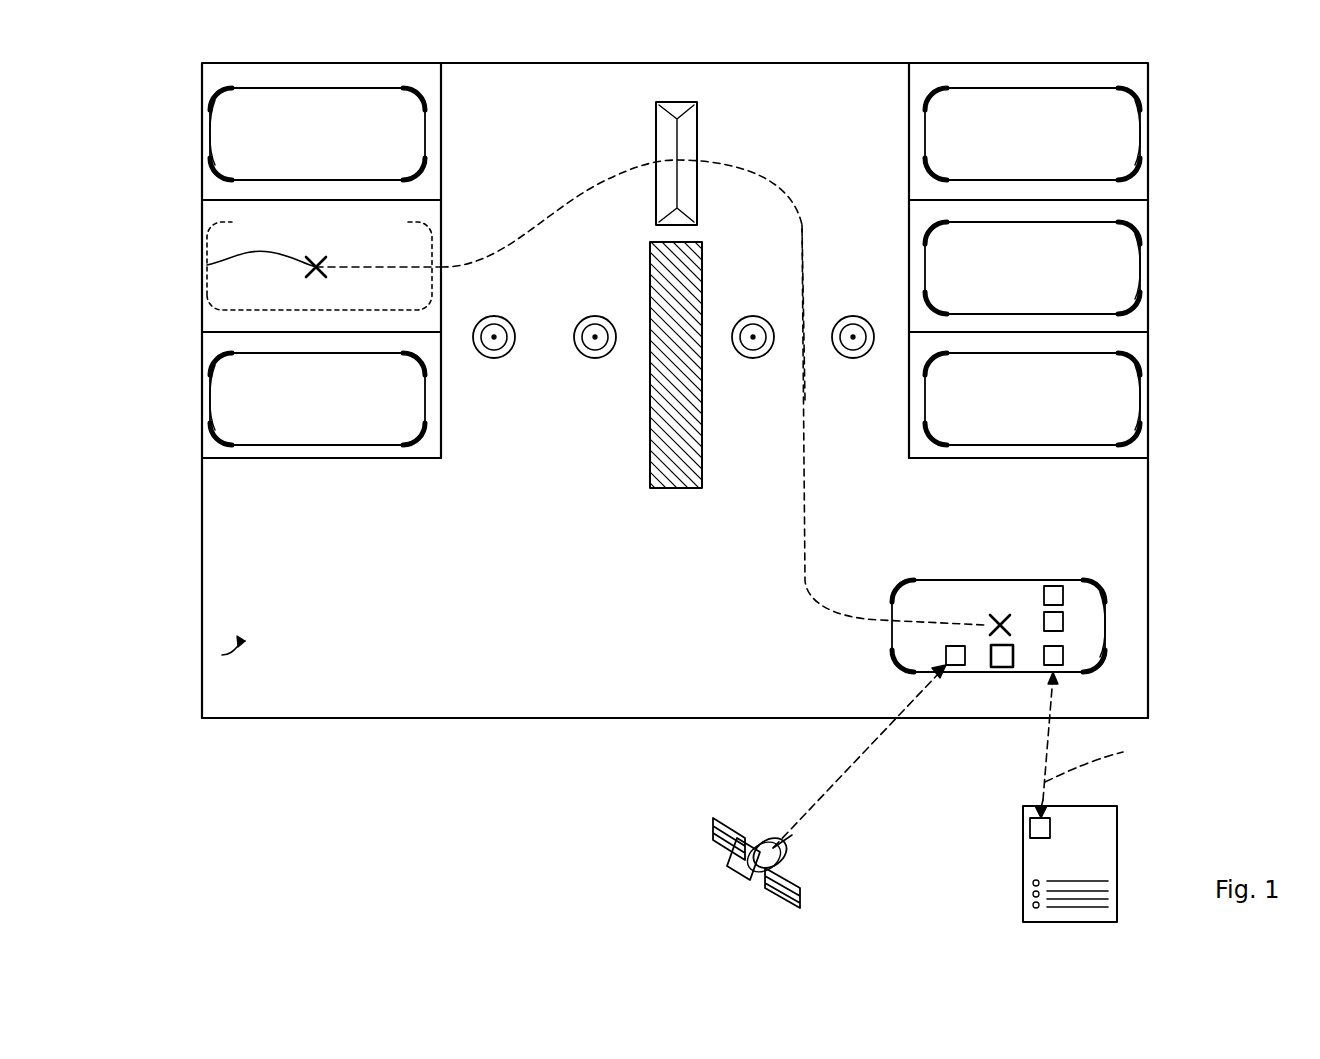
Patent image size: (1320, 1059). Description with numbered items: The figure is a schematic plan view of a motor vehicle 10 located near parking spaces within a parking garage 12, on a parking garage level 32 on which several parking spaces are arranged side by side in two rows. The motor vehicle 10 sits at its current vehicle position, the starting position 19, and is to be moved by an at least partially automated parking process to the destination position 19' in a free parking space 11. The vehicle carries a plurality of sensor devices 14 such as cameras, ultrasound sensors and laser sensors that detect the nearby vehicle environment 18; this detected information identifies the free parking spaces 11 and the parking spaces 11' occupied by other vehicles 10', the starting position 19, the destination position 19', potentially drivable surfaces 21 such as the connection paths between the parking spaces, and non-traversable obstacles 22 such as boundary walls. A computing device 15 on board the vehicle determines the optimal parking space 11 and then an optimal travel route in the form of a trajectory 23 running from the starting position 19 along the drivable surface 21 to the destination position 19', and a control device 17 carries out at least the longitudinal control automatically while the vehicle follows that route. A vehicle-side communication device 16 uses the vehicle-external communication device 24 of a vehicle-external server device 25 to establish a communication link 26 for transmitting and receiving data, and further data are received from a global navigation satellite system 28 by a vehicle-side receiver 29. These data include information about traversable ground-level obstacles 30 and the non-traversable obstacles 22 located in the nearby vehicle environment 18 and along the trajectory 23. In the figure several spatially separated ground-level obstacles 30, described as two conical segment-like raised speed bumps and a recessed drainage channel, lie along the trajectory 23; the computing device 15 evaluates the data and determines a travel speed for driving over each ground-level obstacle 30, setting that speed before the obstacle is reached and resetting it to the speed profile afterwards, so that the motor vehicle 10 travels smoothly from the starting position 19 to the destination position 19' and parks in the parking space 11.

The motor vehicle 10 is at (1058, 626).
The other vehicles 10' is at (674, 266).
The parking space 11 is at (276, 339).
The occupied parking space 11' is at (675, 337).
The parking garage 12 is at (312, 741).
The sensor devices 14 is at (1002, 667).
The computing device 15 is at (1053, 586).
The communication device 16 is at (1095, 665).
The control device 17 is at (1063, 621).
The nearby vehicle environment 18 is at (395, 718).
The starting position 19 is at (989, 586).
The destination position 19' is at (280, 266).
The drivable surface 21 is at (838, 128).
The non-traversable obstacle 22 is at (676, 488).
The trajectory 23 is at (797, 222).
The vehicle-external communication device 24 is at (1030, 828).
The vehicle-external server device 25 is at (1117, 826).
The communication link 26 is at (1105, 760).
The global navigation satellite system 28 is at (725, 882).
The vehicle-side receiver 29 is at (945, 657).
The ground-level obstacle 30 is at (675, 100).
The parking garage level 32 is at (222, 655).